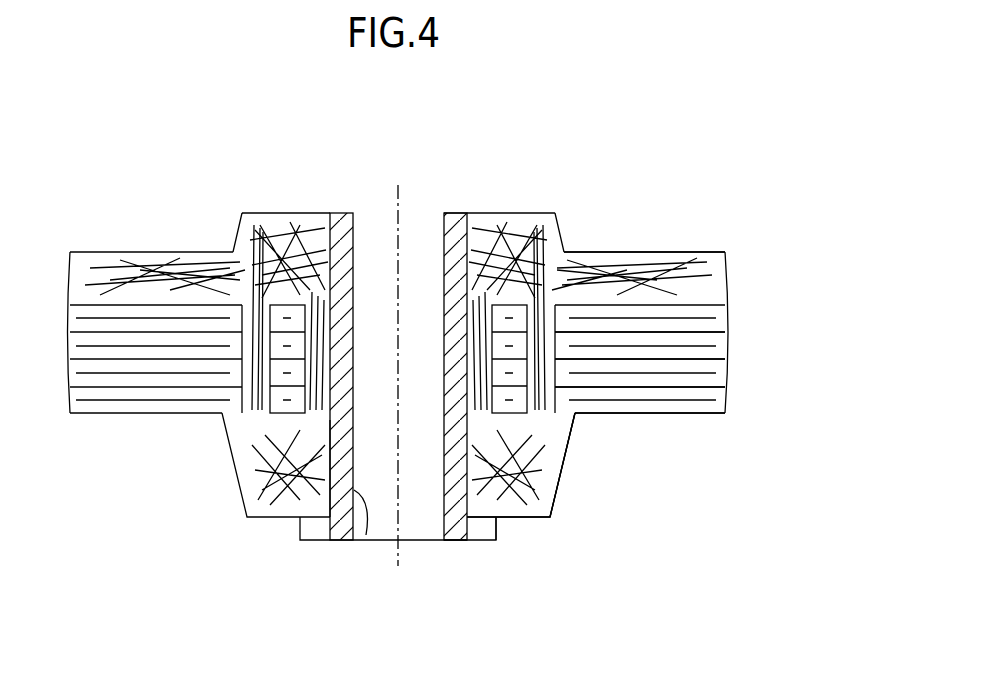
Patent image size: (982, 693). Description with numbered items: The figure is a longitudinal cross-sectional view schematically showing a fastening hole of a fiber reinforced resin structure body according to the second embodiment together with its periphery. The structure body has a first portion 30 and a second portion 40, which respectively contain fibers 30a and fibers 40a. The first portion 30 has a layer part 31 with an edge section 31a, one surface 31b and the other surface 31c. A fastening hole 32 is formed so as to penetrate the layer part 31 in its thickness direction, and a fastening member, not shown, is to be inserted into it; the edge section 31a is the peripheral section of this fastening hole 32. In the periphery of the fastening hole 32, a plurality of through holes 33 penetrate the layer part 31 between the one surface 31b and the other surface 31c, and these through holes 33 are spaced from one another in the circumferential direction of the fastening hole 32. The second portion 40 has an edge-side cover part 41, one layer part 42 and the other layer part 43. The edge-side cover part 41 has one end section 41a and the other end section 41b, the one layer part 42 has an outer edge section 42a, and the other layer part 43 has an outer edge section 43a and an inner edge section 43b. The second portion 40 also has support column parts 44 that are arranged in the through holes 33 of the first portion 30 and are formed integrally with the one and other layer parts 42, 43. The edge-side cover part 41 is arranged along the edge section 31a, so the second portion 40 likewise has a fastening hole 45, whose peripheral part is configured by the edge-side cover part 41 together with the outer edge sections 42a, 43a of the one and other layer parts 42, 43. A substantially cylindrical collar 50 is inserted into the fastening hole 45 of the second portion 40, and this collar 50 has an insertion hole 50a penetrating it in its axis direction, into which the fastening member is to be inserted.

The first portion 30 is at (702, 353).
The fibers 30a is at (152, 362).
The layer part 31 is at (700, 383).
The edge section 31a is at (500, 377).
The one surface 31b is at (667, 262).
The other surface 31c is at (628, 415).
The fastening hole 32 is at (312, 415).
The through holes 33 is at (268, 416).
The second portion 40 is at (120, 251).
The fibers 40a is at (168, 257).
The edge-side cover part 41 is at (465, 378).
The one end section 41a is at (447, 298).
The other end section 41b is at (455, 425).
The one layer part 42 is at (612, 256).
The outer edge section 42a is at (500, 293).
The other layer part 43 is at (517, 518).
The outer edge section 43a is at (462, 487).
The inner edge section 43b is at (576, 418).
The support column parts 44 is at (238, 246).
The fastening hole 45 is at (328, 432).
The collar 50 is at (342, 212).
The insertion hole 50a is at (366, 535).